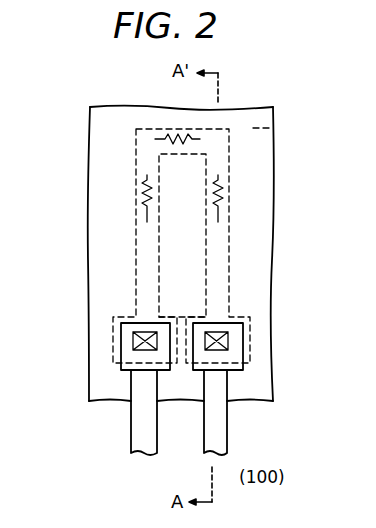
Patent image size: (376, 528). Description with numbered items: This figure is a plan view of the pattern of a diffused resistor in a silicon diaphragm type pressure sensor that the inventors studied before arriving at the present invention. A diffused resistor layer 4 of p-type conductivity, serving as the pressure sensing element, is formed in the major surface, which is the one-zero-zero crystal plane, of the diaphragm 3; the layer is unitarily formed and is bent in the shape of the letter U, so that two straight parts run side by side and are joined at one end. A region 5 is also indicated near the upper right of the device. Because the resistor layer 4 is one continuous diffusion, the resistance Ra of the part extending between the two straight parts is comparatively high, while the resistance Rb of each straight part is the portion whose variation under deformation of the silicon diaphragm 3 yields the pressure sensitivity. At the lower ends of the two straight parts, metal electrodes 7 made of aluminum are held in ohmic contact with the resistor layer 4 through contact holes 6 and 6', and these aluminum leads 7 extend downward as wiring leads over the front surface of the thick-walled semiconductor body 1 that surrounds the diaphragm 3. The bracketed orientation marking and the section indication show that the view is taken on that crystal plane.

The thick-walled semiconductor body 1 is at (118, 125).
The diaphragm 3 is at (106, 197).
The diffused resistor layer 4 is at (229, 198).
The region 5 is at (273, 128).
The resistance of the part extending between the two straight parts Ra is at (175, 134).
The resistance of the straight part Rb is at (238, 175).
The contact hole 6 is at (112, 346).
The contact hole 6' is at (248, 346).
The metal electrode 7 is at (143, 429).